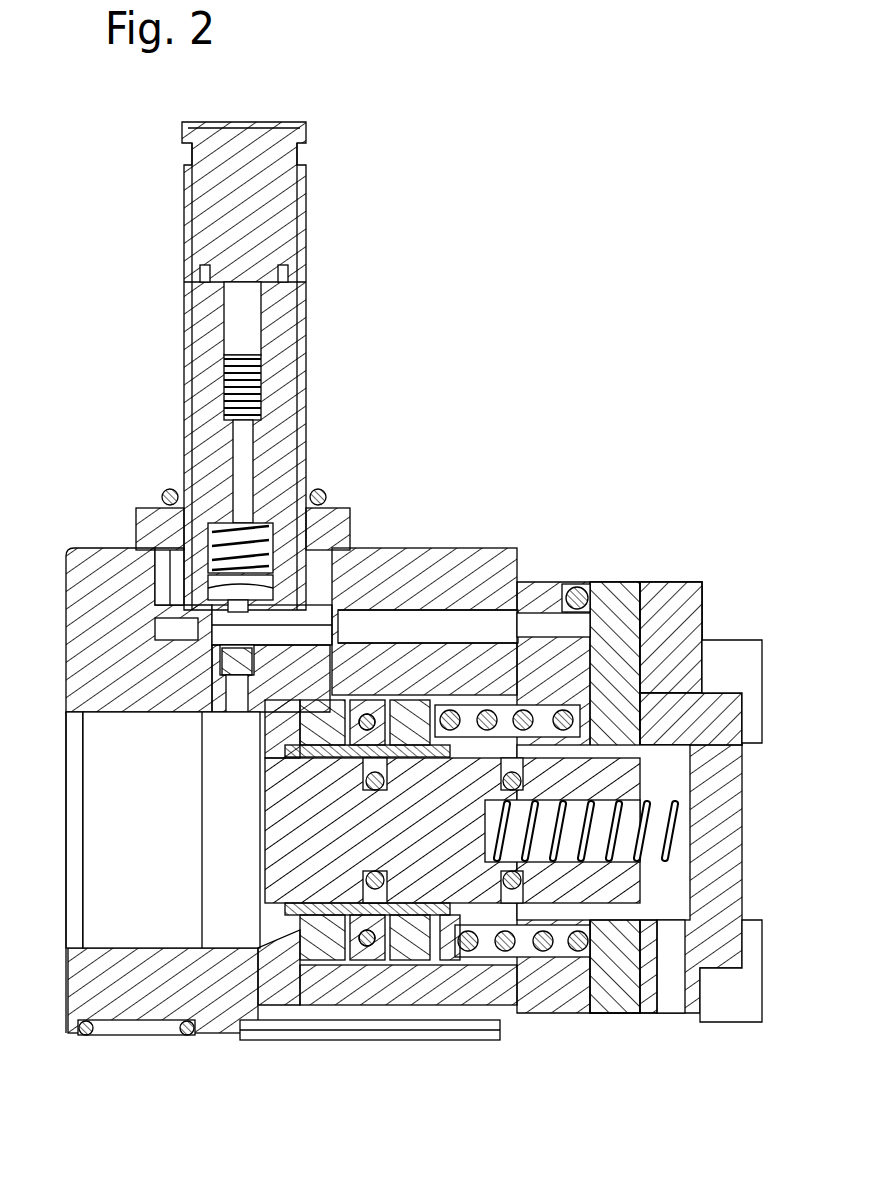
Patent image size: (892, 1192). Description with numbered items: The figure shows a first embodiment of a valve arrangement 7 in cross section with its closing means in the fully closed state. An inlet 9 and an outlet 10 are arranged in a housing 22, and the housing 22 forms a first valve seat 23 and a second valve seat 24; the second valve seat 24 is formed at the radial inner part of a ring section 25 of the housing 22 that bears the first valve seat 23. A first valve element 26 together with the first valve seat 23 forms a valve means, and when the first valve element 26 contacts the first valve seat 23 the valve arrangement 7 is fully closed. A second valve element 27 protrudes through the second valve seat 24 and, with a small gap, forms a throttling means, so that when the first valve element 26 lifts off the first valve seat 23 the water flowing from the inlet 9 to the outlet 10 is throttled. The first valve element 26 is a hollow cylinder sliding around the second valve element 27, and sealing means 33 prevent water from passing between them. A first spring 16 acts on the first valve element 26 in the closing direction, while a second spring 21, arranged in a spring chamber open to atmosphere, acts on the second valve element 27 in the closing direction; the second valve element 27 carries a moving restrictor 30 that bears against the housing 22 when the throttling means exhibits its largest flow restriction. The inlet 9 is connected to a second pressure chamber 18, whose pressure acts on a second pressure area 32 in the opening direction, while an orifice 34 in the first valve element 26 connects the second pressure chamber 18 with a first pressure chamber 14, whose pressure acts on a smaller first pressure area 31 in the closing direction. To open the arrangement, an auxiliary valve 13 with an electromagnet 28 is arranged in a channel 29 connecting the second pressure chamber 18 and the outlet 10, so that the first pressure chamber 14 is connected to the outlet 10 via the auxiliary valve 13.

The valve arrangement 7 is at (399, 630).
The inlet 9 is at (415, 1025).
The outlet 10 is at (95, 897).
The auxiliary valve 13 is at (210, 592).
The first pressure chamber 14 is at (470, 716).
The first spring 16 is at (565, 692).
The second pressure chamber 18 is at (340, 700).
The second spring 21 is at (688, 822).
The housing 22 is at (278, 975).
The first valve seat 23 is at (300, 698).
The second valve seat 24 is at (285, 778).
The ring section 25 is at (275, 737).
The first valve element 26 is at (380, 700).
The second valve element 27 is at (313, 945).
The electromagnet 28 is at (197, 396).
The channel 29 is at (460, 612).
The moving restrictor 30 is at (628, 907).
The first pressure area 31 is at (452, 950).
The second pressure area 32 is at (331, 880).
The sealing means 33 is at (360, 778).
The orifice 34 is at (377, 905).